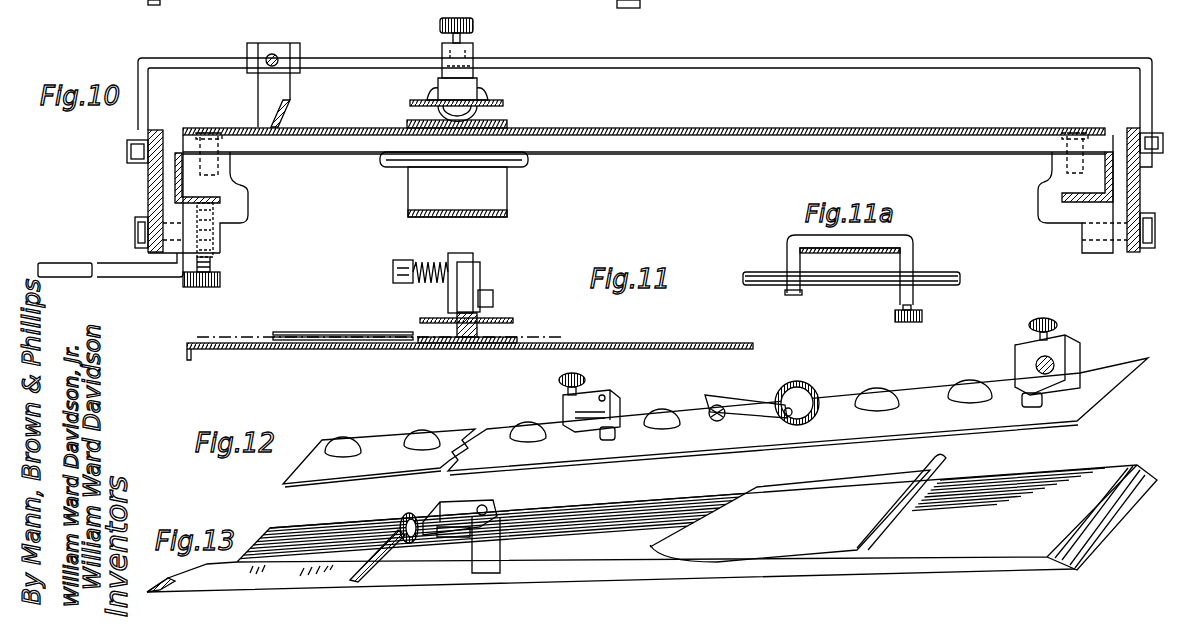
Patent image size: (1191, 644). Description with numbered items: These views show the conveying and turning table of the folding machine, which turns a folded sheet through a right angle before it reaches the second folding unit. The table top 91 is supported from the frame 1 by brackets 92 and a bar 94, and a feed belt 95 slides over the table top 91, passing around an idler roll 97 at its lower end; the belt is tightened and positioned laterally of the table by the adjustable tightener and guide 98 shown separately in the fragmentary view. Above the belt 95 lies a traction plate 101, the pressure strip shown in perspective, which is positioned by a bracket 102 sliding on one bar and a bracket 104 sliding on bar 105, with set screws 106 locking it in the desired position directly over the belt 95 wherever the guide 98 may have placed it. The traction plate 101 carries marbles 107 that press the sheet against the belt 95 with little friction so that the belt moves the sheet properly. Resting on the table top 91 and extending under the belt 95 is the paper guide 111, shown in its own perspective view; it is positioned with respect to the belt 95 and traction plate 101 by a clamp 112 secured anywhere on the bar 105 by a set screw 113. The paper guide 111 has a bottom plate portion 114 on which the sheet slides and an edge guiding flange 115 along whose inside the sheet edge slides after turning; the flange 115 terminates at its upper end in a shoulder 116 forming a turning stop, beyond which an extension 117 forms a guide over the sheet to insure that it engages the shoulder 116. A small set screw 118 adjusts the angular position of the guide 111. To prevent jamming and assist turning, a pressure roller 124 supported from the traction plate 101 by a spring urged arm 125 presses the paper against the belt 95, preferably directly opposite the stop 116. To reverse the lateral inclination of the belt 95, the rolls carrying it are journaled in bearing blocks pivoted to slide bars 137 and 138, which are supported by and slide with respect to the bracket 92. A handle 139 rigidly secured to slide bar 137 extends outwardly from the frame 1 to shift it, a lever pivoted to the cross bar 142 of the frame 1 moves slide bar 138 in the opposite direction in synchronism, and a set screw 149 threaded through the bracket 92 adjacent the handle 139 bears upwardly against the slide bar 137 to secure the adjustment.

In FIG. 10, the frame 1 is at (148, 196).
In FIG. 10, the table top 91 is at (727, 128).
In FIG. 11, the table top 91 is at (711, 343).
In FIG. 10, the bracket 92 is at (247, 207).
In FIG. 10, the bar 94 is at (658, 146).
In FIG. 10, the feed belt 95 is at (500, 121).
In FIG. 11, the feed belt 95 is at (517, 337).
In FIG. 11A, the feed belt 95 is at (856, 255).
In FIG. 10, the idler roll 97 is at (392, 170).
In FIG. 11A, the tightener and guide 98 is at (915, 267).
In FIG. 10, the traction plate 101 is at (505, 103).
In FIG. 11, the traction plate 101 is at (512, 318).
In FIG. 12, the traction plate 101 is at (925, 395).
In FIG. 12, the bracket 102 is at (1075, 350).
In FIG. 10, the bracket 104 is at (474, 52).
In FIG. 12, the bracket 104 is at (622, 400).
In FIG. 10, the bar 105 is at (695, 60).
In FIG. 10, the set screw 106 is at (440, 26).
In FIG. 12, the set screw 106 is at (586, 379).
In FIG. 12, the marbles 107 is at (974, 380).
In FIG. 10, the paper guide 111 is at (332, 124).
In FIG. 13, the paper guide 111 is at (631, 582).
In FIG. 10, the clamp 112 is at (292, 50).
In FIG. 13, the clamp 112 is at (466, 500).
In FIG. 13, the set screw 113 is at (405, 518).
In FIG. 10, the bottom plate portion 114 is at (365, 128).
In FIG. 11, the bottom plate portion 114 is at (334, 351).
In FIG. 13, the bottom plate portion 114 is at (955, 548).
In FIG. 10, the edge guiding flange 115 is at (279, 110).
In FIG. 13, the edge guiding flange 115 is at (404, 572).
In FIG. 11, the shoulder 116 is at (282, 339).
In FIG. 13, the shoulder 116 is at (718, 570).
In FIG. 11, the extension 117 is at (318, 331).
In FIG. 13, the extension 117 is at (866, 487).
In FIG. 10, the set screw 118 is at (266, 56).
In FIG. 13, the set screw 118 is at (500, 511).
In FIG. 11, the pressure roller 124 is at (476, 300).
In FIG. 12, the pressure roller 124 is at (800, 385).
In FIG. 11, the spring urged arm 125 is at (447, 301).
In FIG. 12, the spring urged arm 125 is at (758, 396).
In FIG. 10, the slide bar 137 is at (178, 152).
In FIG. 10, the slide bar 138 is at (1109, 152).
In FIG. 10, the handle 139 is at (151, 278).
In FIG. 10, the cross bar 142 is at (847, 0).
In FIG. 10, the set screw 149 is at (214, 270).